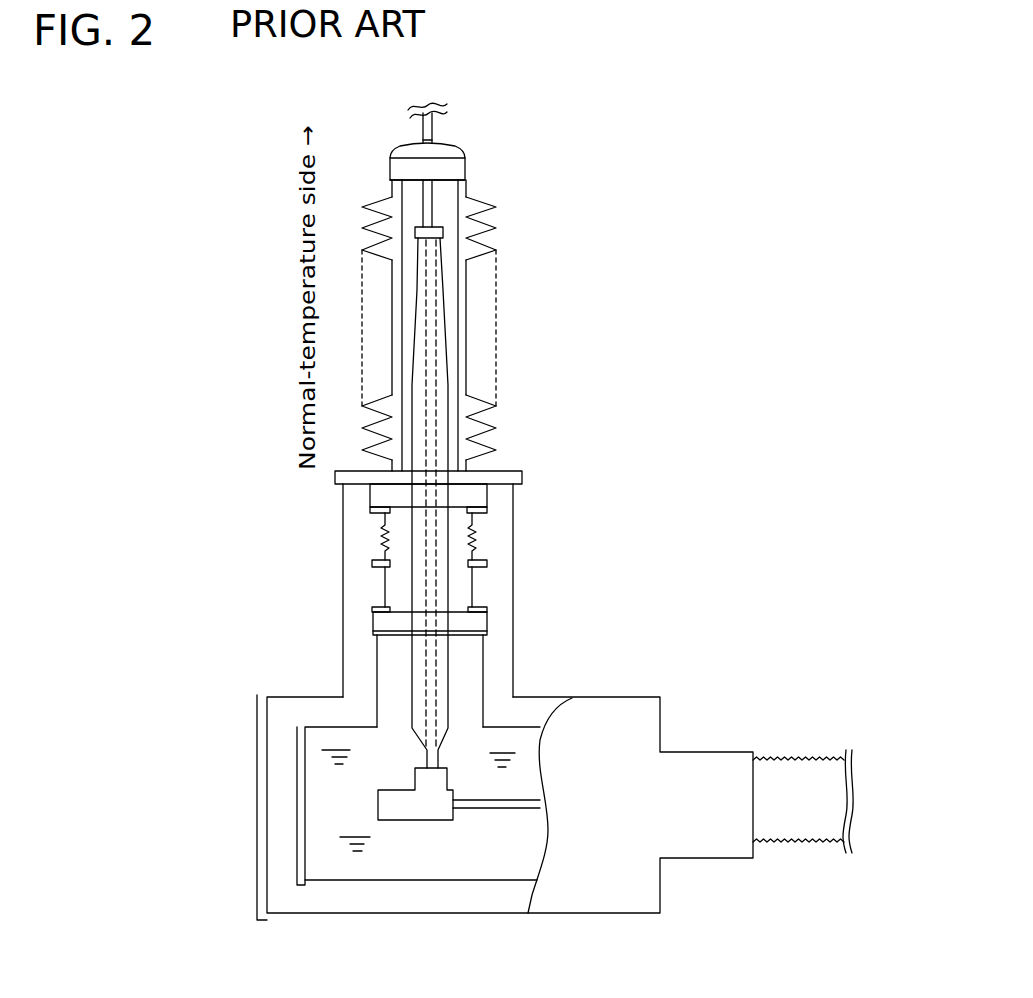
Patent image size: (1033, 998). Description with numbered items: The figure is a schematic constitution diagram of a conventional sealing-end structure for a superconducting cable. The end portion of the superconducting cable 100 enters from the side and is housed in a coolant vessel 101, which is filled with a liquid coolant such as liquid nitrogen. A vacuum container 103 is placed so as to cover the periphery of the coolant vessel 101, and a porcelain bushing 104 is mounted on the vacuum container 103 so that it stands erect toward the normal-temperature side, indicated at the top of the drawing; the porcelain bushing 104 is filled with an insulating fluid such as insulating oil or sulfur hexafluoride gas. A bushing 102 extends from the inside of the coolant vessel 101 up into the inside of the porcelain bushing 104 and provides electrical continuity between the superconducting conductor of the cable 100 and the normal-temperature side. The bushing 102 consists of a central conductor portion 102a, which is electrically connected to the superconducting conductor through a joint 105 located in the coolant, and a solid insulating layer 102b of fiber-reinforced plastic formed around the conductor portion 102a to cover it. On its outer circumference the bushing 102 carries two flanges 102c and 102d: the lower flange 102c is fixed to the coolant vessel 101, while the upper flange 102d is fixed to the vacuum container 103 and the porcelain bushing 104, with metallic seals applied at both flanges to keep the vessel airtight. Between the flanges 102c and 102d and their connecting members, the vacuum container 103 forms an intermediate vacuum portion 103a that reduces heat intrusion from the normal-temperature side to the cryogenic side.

The superconducting cable 100 is at (792, 840).
The coolant vessel 101 is at (508, 880).
The bushing 102 is at (225, 605).
The conductor portion 102a is at (430, 677).
The solid insulating layer 102b is at (413, 698).
The flange 102c is at (487, 617).
The flange 102d is at (370, 488).
The vacuum container 103 is at (540, 698).
The intermediate vacuum portion 103a is at (460, 588).
The porcelain bushing 104 is at (473, 397).
The joint 105 is at (413, 810).